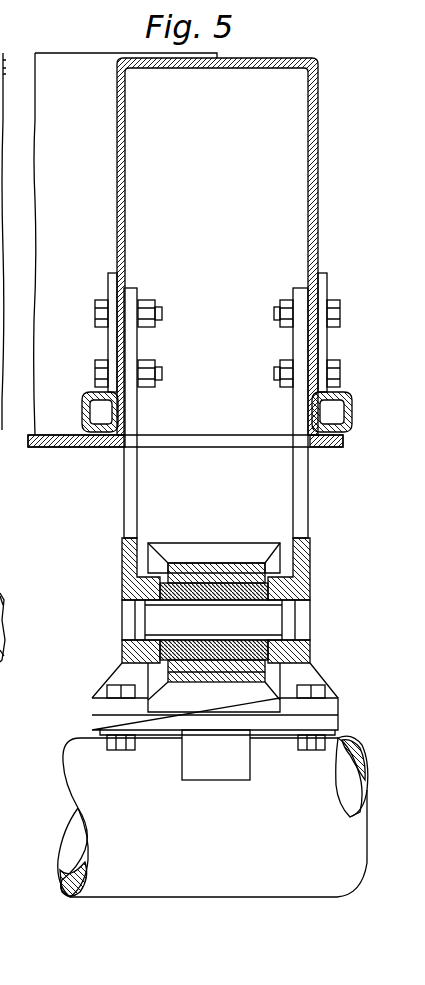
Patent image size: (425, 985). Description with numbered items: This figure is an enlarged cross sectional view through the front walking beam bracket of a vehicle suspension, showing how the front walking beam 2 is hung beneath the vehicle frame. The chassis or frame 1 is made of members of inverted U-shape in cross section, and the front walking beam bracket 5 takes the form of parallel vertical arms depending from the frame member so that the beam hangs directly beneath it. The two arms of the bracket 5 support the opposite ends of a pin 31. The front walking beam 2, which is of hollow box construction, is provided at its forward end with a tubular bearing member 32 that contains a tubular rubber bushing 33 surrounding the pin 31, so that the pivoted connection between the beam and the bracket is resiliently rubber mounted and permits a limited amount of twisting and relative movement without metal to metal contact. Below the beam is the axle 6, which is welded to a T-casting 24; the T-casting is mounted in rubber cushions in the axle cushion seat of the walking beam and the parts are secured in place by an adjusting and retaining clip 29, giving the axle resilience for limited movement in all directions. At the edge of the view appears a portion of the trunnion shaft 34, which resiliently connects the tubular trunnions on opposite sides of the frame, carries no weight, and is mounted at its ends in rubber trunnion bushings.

The chassis or frame 1 is at (318, 97).
The front walking beam 2 is at (182, 543).
The front walking beam bracket 5 is at (124, 482).
The axle 6 is at (80, 800).
The T-casting 24 is at (188, 763).
The adjusting and retaining clip 29 is at (95, 725).
The pin 31 is at (305, 612).
The tubular bearing member 32 is at (215, 572).
The tubular rubber bushing 33 is at (277, 597).
The trunnion shaft 34 is at (0, 575).